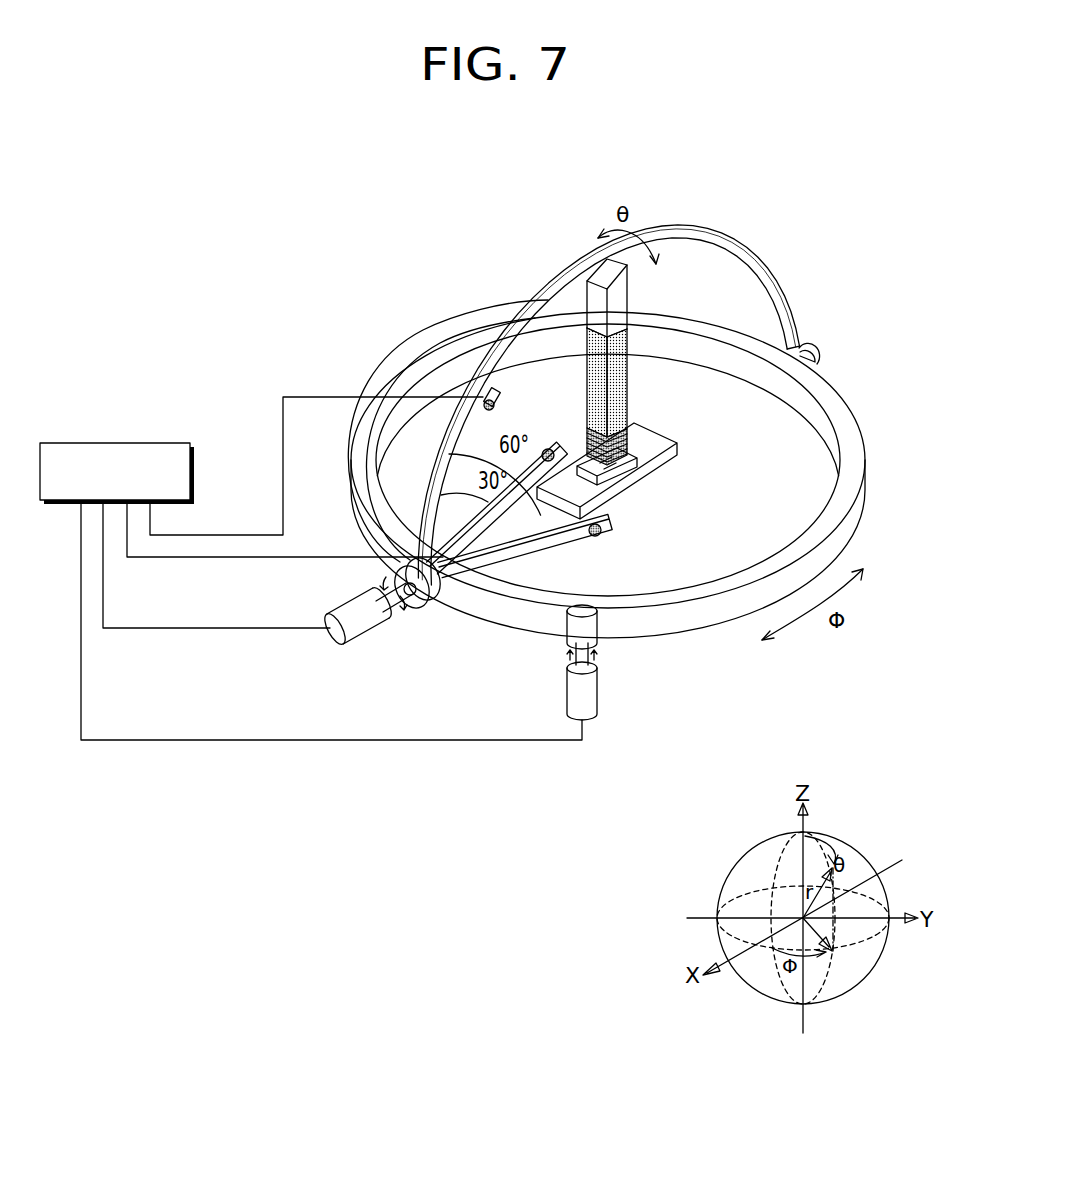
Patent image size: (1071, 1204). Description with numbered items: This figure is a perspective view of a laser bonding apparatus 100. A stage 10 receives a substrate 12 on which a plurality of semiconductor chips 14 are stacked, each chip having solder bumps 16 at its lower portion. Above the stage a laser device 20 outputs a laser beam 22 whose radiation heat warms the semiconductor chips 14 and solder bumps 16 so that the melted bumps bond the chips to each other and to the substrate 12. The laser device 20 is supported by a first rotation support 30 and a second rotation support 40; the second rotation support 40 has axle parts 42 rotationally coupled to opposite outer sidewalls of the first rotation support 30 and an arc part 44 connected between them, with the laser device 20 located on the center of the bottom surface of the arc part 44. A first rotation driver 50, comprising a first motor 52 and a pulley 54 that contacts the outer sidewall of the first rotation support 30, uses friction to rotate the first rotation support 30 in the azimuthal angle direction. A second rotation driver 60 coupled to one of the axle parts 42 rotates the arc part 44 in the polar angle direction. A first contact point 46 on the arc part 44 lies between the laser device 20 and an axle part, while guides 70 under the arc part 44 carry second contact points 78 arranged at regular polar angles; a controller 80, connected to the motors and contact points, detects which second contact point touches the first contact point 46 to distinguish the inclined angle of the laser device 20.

The laser bonding apparatus 100 is at (831, 197).
The stage 10 is at (670, 447).
The substrate 12 is at (628, 452).
The semiconductor chips 14 is at (610, 437).
The solder bumps 16 is at (627, 463).
The laser device 20 is at (620, 287).
The laser beam 22 is at (622, 382).
The first rotation support 30 is at (845, 518).
The second rotation support 40 is at (640, 405).
The axle parts 42 is at (808, 350).
The arc part 44 is at (795, 303).
The first contact point 46 is at (505, 398).
The first rotation driver 50 is at (638, 662).
The first motor 52 is at (585, 690).
The pulley 54 is at (588, 630).
The second rotation driver 60 is at (363, 618).
The guides 70 is at (610, 520).
The second contact points 78 is at (598, 533).
The controller 80 is at (140, 442).